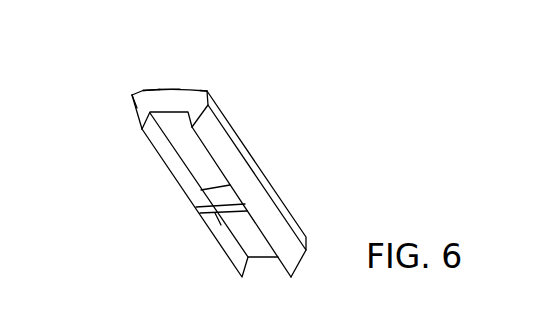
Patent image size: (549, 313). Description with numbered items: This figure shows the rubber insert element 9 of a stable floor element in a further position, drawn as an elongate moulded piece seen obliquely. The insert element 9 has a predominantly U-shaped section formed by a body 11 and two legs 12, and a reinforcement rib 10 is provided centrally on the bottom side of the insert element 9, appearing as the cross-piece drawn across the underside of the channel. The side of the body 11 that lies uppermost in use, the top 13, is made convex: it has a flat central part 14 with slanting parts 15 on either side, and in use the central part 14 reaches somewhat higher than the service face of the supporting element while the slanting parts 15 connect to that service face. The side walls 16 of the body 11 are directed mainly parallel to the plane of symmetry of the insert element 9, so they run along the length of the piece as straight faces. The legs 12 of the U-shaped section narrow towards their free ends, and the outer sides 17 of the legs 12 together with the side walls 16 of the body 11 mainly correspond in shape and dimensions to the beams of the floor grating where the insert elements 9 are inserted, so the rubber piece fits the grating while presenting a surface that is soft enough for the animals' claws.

The insert element 9 is at (298, 148).
The reinforcement rib 10 is at (212, 196).
The body 11 is at (188, 90).
The legs 12 is at (190, 117).
The top 13 is at (143, 89).
The central part 14 is at (165, 88).
The slanting parts 15 is at (135, 93).
The side walls 16 is at (134, 107).
The outer sides 17 is at (137, 119).